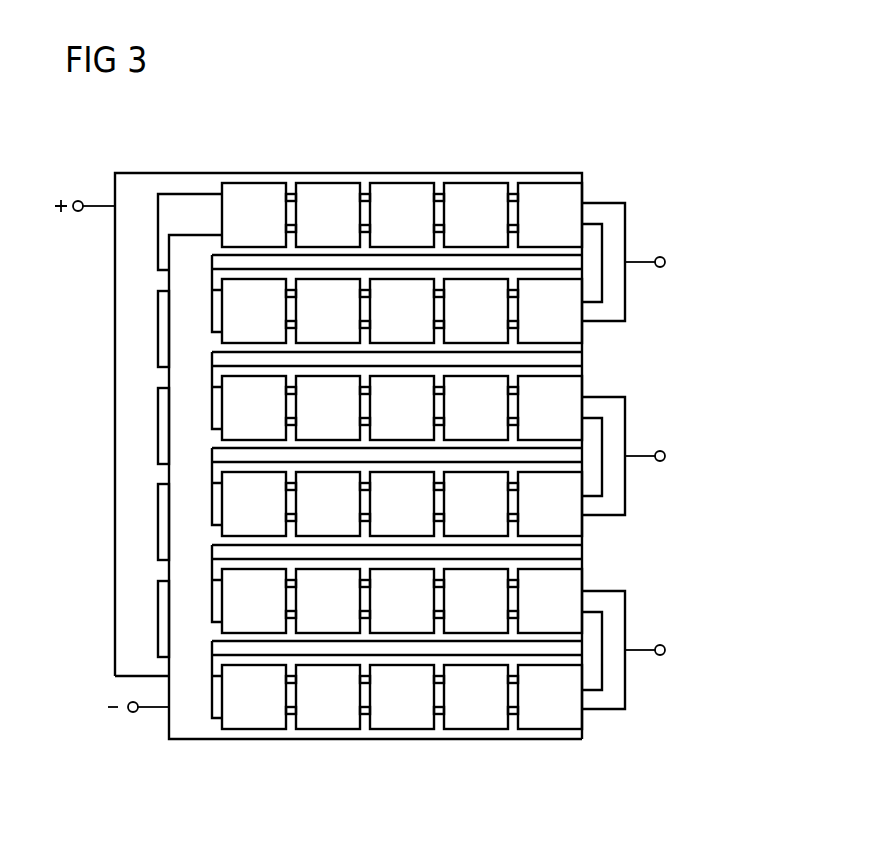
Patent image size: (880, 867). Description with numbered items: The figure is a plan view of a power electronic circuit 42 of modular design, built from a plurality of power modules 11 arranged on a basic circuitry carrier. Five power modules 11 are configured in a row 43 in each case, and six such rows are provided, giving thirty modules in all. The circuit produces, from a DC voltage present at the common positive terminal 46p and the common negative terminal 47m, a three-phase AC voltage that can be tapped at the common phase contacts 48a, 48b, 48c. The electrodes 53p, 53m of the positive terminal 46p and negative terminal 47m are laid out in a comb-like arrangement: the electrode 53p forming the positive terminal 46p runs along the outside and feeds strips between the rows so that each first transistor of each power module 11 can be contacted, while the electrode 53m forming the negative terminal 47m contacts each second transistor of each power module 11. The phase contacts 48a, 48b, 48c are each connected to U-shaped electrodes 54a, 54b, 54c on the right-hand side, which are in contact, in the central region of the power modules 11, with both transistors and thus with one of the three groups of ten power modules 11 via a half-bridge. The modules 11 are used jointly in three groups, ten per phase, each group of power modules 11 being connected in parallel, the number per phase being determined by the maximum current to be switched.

The power module 11 is at (458, 200).
The power electronic circuit 42 is at (592, 128).
The row 43 is at (205, 216).
The common positive terminal 46p is at (102, 204).
The common negative terminal 47m is at (153, 710).
The common phase contact 48a is at (666, 262).
The common phase contact 48b is at (666, 456).
The common phase contact 48c is at (666, 650).
The electrode of the positive terminal 53p is at (137, 197).
The electrode of the negative terminal 53m is at (192, 713).
The U-shaped electrode 54a is at (614, 311).
The U-shaped electrode 54b is at (614, 505).
The U-shaped electrode 54c is at (614, 699).